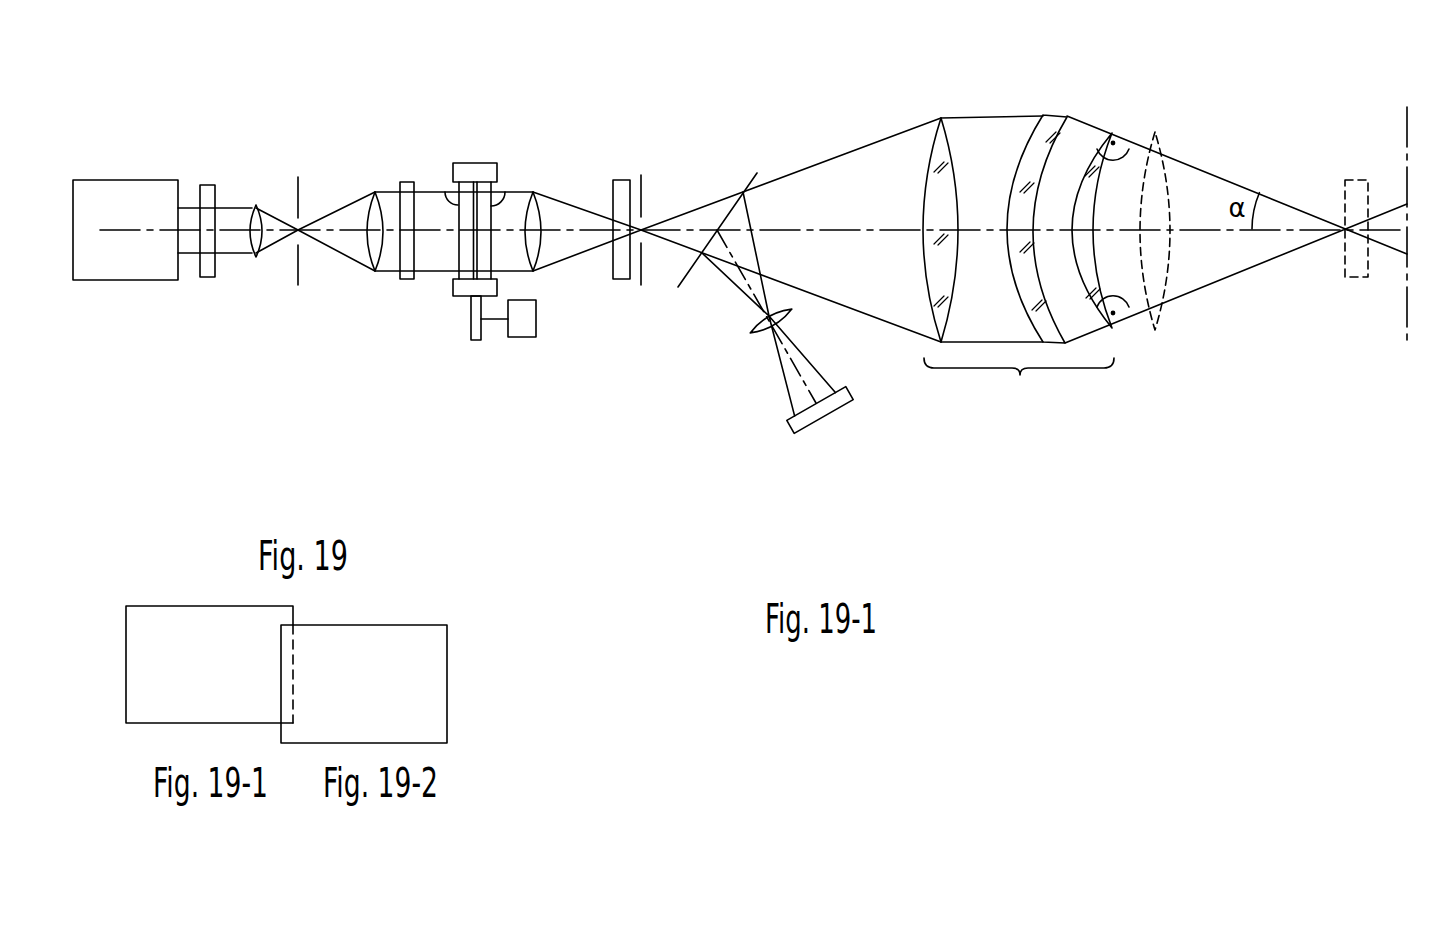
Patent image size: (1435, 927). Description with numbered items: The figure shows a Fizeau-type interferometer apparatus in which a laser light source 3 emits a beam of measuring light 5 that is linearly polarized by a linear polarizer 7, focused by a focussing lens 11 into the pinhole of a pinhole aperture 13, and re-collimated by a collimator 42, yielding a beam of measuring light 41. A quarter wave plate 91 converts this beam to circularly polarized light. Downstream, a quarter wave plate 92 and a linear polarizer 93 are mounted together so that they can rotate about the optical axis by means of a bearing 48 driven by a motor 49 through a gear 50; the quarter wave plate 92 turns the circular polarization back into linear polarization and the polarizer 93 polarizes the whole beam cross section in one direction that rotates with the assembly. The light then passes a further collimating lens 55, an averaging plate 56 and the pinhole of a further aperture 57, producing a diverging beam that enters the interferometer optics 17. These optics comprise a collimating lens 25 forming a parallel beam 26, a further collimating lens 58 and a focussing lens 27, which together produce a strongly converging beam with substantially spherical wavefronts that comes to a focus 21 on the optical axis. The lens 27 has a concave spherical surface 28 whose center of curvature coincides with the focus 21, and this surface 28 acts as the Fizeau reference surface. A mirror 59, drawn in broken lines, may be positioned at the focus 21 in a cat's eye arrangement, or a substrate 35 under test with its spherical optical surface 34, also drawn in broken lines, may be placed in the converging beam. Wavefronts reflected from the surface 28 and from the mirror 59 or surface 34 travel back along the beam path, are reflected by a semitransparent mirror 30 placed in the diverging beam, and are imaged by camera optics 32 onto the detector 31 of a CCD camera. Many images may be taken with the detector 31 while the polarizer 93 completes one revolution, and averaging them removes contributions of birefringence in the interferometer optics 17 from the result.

The laser light source 3 is at (125, 180).
The beam of measuring light 5 is at (237, 208).
The linear polarizer 7 is at (207, 278).
The focussing lens 11 is at (256, 205).
The pinhole aperture 13 is at (302, 188).
The collimator 42 is at (375, 192).
The beam of measuring light 41 is at (388, 192).
The quarter wave plate 91 is at (408, 279).
The quarter wave plate 92 is at (445, 192).
The bearing 48 is at (473, 163).
The linear polarizer 93 is at (505, 192).
The collimating lens 55 is at (533, 192).
The gear 50 is at (477, 340).
The motor 49 is at (522, 337).
The averaging plate 56 is at (622, 180).
The aperture 57 is at (644, 190).
The semitransparent mirror 30 is at (748, 175).
The camera optics 32 is at (751, 334).
The detector 31 is at (790, 428).
The collimating lens 25 is at (941, 118).
The parallel beam 26 is at (988, 120).
The collimating lens 58 is at (1053, 116).
The focussing lens 27 is at (1112, 130).
The concave spherical surface 28 is at (1120, 136).
The substrate 35 is at (1168, 145).
The spherical optical surface 34 is at (1155, 330).
The interferometer optics 17 is at (1019, 385).
The mirror 59 is at (1357, 180).
The focus 21 is at (1343, 233).